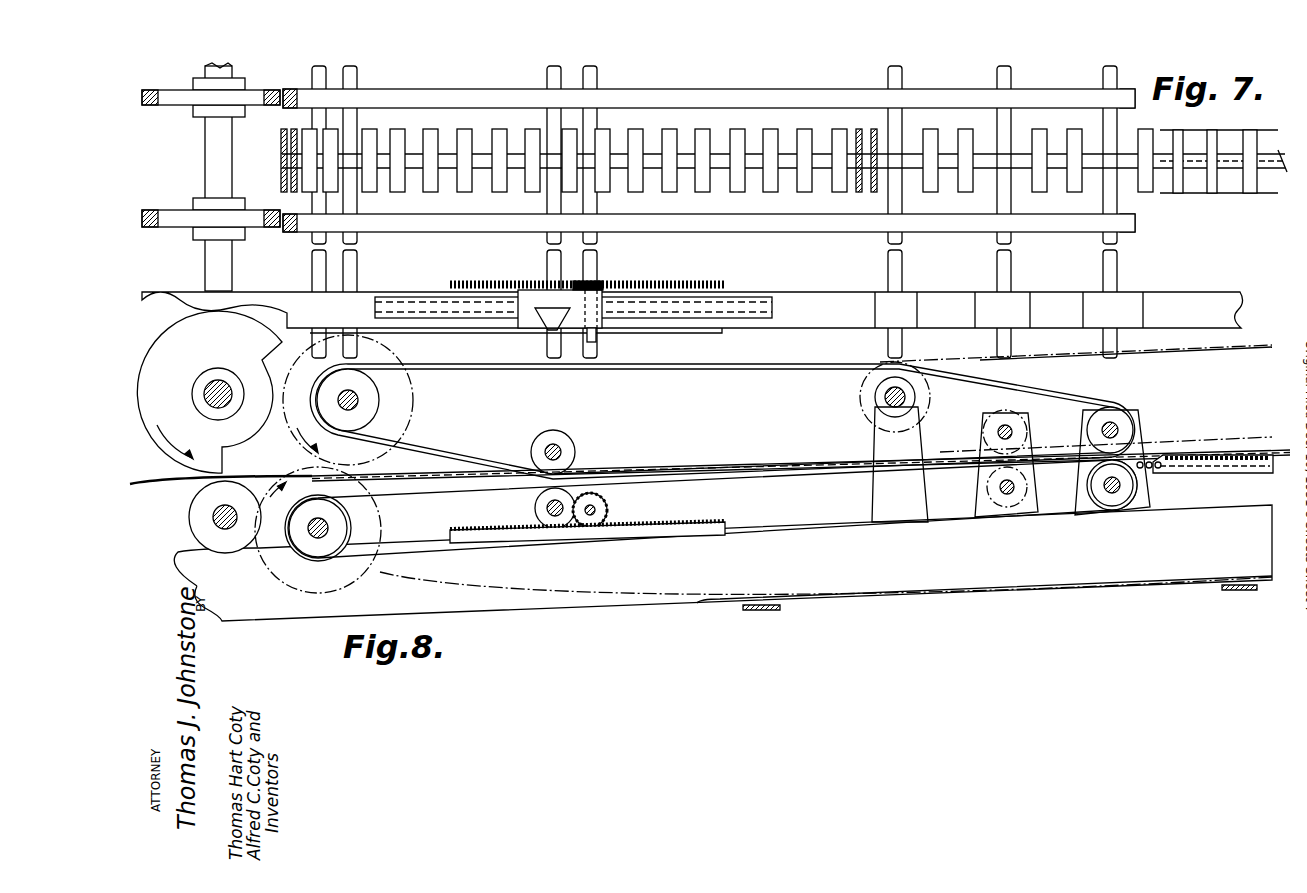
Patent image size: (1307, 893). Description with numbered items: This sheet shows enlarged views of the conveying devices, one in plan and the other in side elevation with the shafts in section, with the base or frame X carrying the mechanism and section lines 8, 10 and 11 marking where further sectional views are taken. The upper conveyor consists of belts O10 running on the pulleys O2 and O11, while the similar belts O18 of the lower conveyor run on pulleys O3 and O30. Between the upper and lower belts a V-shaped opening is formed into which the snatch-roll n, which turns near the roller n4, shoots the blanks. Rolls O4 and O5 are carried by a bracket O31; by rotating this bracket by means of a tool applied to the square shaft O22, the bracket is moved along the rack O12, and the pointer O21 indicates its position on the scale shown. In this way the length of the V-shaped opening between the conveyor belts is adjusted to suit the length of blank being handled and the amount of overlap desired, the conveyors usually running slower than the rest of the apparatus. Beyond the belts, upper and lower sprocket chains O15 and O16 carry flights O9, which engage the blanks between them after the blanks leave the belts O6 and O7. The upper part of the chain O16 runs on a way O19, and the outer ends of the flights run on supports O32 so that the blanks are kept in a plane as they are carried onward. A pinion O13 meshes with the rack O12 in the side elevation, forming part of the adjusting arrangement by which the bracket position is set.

In FIG. 7, the snatch-roll n is at (172, 104).
In FIG. 8, the snatch-roll n is at (165, 345).
In FIG. 8, the feed roller n4 is at (190, 512).
In FIG. 7, the pulley O2 is at (368, 95).
In FIG. 8, the pulley O2 is at (370, 398).
In FIG. 8, the pulley O3 is at (380, 478).
In FIG. 7, the roll O4 is at (536, 92).
In FIG. 8, the roll O4 is at (575, 448).
In FIG. 8, the roll O5 is at (532, 512).
In FIG. 8, the belt O6 is at (490, 553).
In FIG. 8, the belt O7 is at (722, 421).
In FIG. 7, the flights O9 is at (836, 186).
In FIG. 7, the belts of the upper conveyor O10 is at (698, 106).
In FIG. 8, the belts of the upper conveyor O10 is at (778, 378).
In FIG. 7, the pulley O11 is at (1090, 89).
In FIG. 8, the pulley O11 is at (1090, 432).
In FIG. 7, the rack O12 is at (660, 282).
In FIG. 8, the rack O12 is at (668, 514).
In FIG. 7, the pinion O13 is at (600, 282).
In FIG. 8, the pinion O13 is at (600, 494).
In FIG. 7, the sprocket chain O15 is at (968, 185).
In FIG. 8, the sprocket chain O15 is at (1118, 355).
In FIG. 7, the sprocket chain O16 is at (688, 182).
In FIG. 8, the sprocket chain O16 is at (775, 480).
In FIG. 8, the belts of the lower conveyor O18 is at (868, 475).
In FIG. 7, the way O19 is at (1275, 150).
In FIG. 8, the way O19 is at (1262, 474).
In FIG. 7, the pointer O21 is at (552, 335).
In FIG. 7, the square shaft O22 is at (597, 336).
In FIG. 8, the pulley O30 is at (1112, 500).
In FIG. 7, the bracket O31 is at (520, 322).
In FIG. 8, the bracket O31 is at (545, 428).
In FIG. 7, the supports O32 is at (1193, 112).
In FIG. 8, the supports O32 is at (1180, 474).
In FIG. 7, the base plate X is at (852, 292).
In FIG. 8, the base plate X is at (668, 603).
In FIG. 7, the section line 8 is at (143, 268).
In FIG. 8, the section line 10 is at (1025, 346).
In FIG. 8, the section line 11 is at (1173, 390).